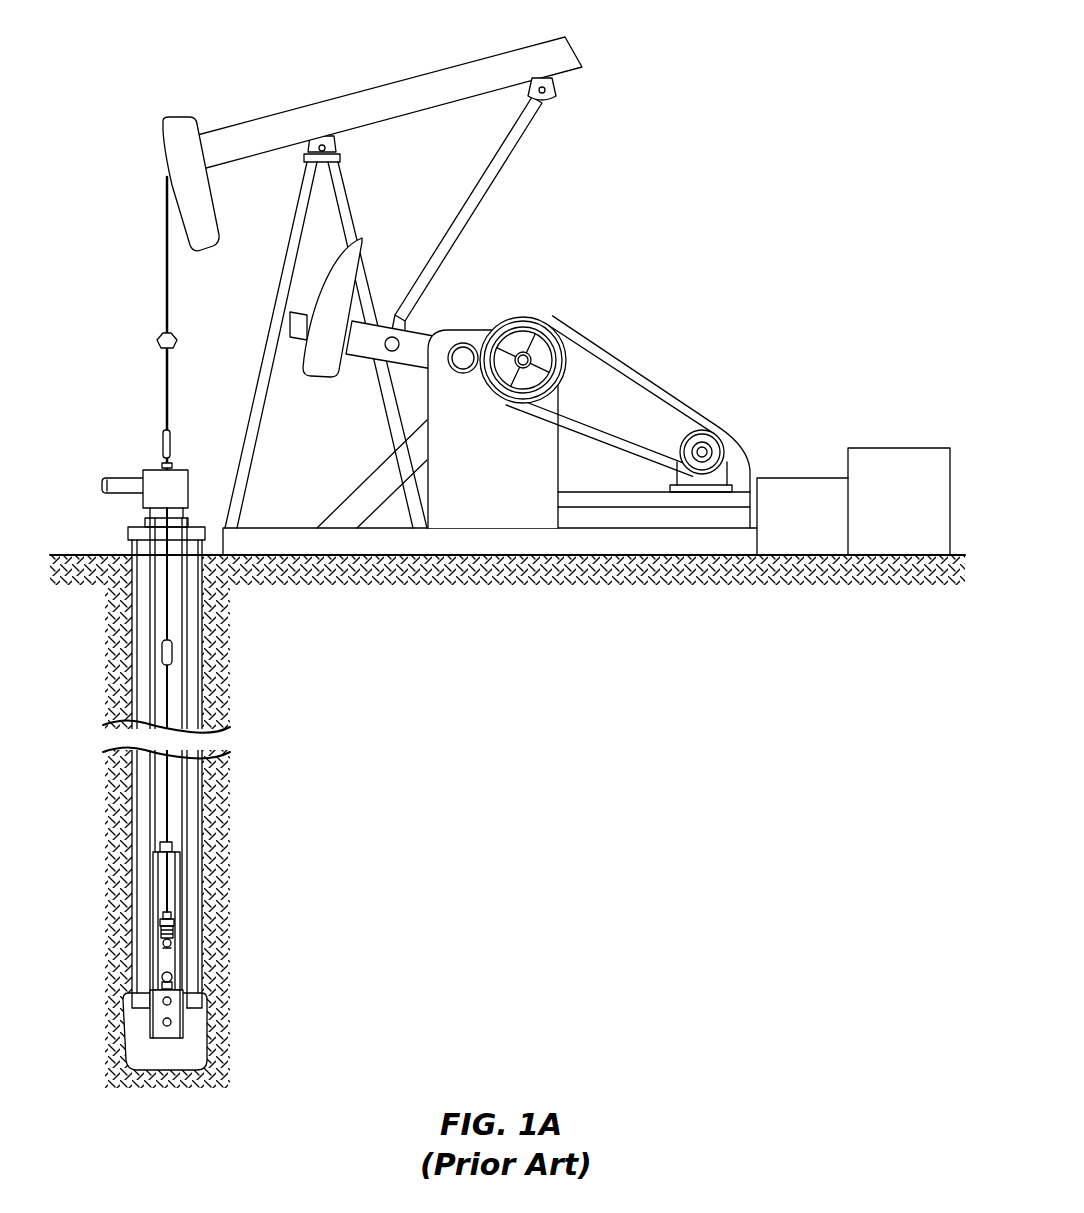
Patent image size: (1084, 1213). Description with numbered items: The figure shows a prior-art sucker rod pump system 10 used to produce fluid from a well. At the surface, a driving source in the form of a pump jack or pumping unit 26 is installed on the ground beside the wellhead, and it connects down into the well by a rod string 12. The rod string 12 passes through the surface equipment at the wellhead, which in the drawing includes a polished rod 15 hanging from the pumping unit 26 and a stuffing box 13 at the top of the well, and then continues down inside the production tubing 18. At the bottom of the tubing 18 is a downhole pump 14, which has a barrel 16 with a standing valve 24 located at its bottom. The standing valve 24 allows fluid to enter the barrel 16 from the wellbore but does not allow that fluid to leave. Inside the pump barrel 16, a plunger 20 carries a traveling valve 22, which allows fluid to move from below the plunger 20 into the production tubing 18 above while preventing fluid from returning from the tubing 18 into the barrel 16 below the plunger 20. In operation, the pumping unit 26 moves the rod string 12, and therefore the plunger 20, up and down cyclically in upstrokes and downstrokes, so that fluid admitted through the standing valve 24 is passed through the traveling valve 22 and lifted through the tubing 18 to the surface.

The sucker rod pump system 10 is at (173, 72).
The pumping unit 26 is at (624, 196).
The polished rod 15 is at (165, 395).
The stuffing box 13 is at (155, 468).
The rod string 12 is at (163, 610).
The production tubing 18 is at (150, 682).
The downhole pump 14 is at (150, 830).
The barrel 16 is at (157, 878).
The plunger 20 is at (163, 935).
The traveling valve 22 is at (160, 940).
The standing valve 24 is at (158, 980).